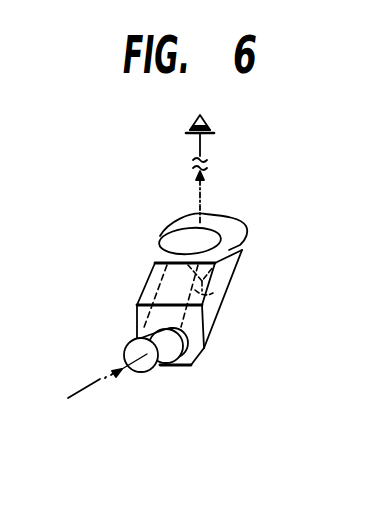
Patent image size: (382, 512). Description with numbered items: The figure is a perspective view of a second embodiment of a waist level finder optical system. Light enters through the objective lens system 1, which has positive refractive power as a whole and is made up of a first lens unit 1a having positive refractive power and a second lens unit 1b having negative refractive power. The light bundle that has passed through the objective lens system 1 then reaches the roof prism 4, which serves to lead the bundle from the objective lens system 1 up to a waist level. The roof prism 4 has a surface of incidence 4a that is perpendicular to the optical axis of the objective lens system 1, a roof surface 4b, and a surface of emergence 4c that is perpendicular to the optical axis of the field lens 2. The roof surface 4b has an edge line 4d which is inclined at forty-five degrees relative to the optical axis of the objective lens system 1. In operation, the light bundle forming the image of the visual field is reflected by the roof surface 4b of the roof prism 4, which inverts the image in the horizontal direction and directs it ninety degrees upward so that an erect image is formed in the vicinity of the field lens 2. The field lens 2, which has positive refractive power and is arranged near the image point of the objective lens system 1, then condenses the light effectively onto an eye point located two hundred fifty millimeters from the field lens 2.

The objective lens system 1 is at (170, 397).
The first lens unit 1a is at (144, 379).
The second lens unit 1b is at (191, 366).
The field lens 2 is at (228, 217).
The roof prism 4 is at (235, 277).
The surface of incidence 4a is at (207, 350).
The roof surface 4b is at (172, 291).
The surface of emergence 4c is at (243, 251).
The edge line 4d is at (214, 293).